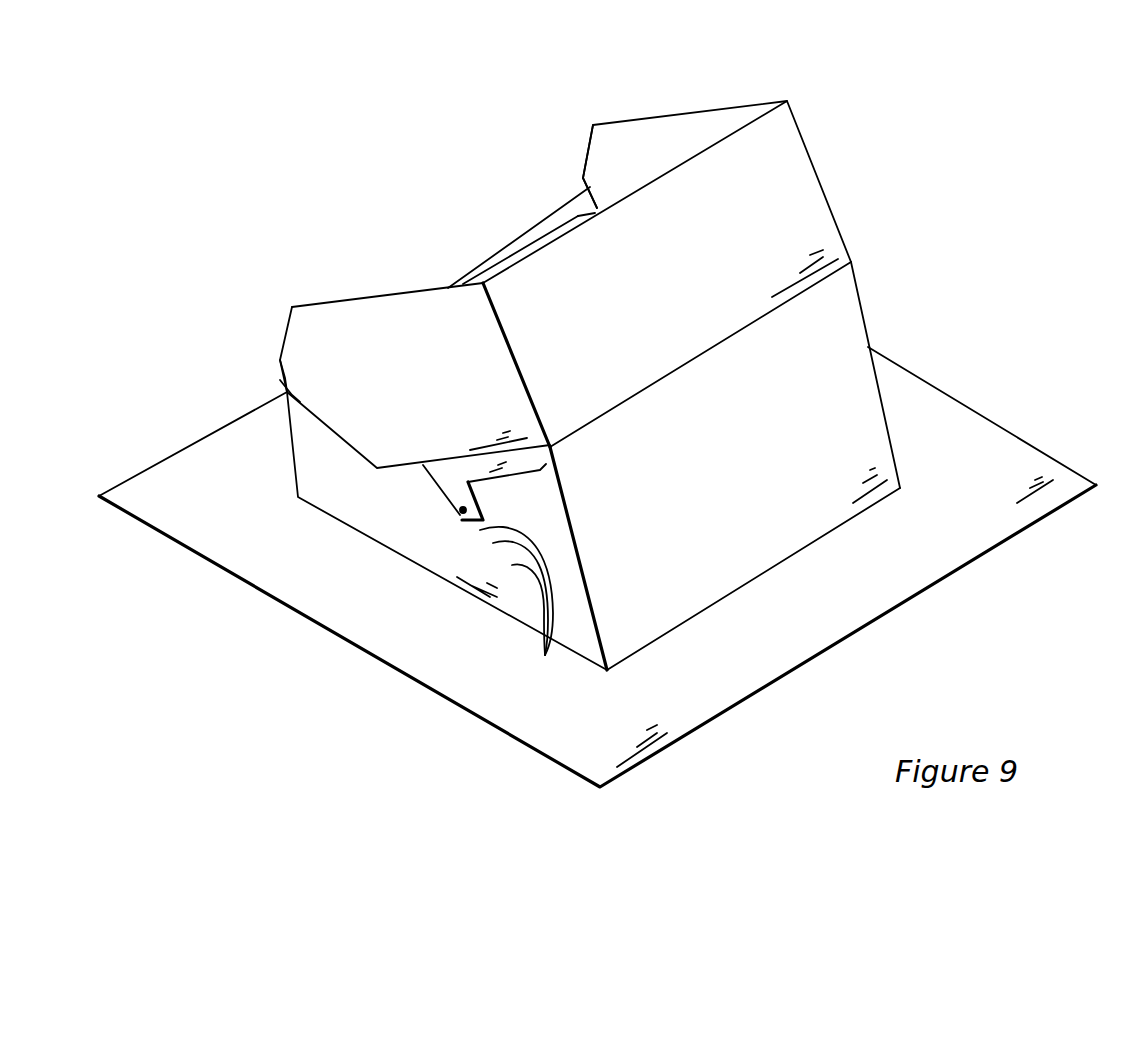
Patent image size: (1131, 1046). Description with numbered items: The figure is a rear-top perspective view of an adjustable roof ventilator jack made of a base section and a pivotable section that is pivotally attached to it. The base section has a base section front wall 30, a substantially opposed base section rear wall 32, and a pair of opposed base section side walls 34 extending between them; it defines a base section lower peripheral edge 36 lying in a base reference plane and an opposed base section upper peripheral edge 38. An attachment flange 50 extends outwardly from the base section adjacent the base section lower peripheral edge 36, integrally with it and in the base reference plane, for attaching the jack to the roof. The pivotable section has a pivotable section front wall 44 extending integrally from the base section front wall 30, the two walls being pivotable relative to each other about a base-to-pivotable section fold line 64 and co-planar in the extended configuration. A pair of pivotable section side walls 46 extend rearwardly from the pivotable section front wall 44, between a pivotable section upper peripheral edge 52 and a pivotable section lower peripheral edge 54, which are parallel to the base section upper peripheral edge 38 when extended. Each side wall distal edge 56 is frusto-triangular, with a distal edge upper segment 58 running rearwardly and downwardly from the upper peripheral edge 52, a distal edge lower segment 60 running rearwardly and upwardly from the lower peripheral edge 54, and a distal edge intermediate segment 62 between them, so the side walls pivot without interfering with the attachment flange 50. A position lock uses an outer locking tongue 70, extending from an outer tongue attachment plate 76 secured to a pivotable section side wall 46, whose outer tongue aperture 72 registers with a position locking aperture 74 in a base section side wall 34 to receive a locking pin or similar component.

The base section front wall 30 is at (822, 355).
The base section rear wall 32 is at (540, 242).
The base section side wall 34 is at (520, 600).
The base section lower peripheral edge 36 is at (803, 553).
The base section upper peripheral edge 38 is at (283, 390).
The pivotable section front wall 44 is at (773, 198).
The pivotable section side wall 46 is at (675, 132).
The attachment flange 50 is at (962, 423).
The pivotable section upper peripheral edge 52 is at (361, 297).
The pivotable section lower peripheral edge 54 is at (395, 467).
The side wall distal edge 56 is at (540, 159).
The distal edge upper segment 58 is at (583, 153).
The distal edge lower segment 60 is at (370, 427).
The distal edge intermediate segment 62 is at (583, 182).
The base-to-pivotable section fold line 64 is at (798, 287).
The outer locking tongue 70 is at (452, 492).
The outer tongue aperture 72 is at (460, 515).
The position locking aperture 74 is at (545, 655).
The outer tongue attachment plate 76 is at (530, 467).